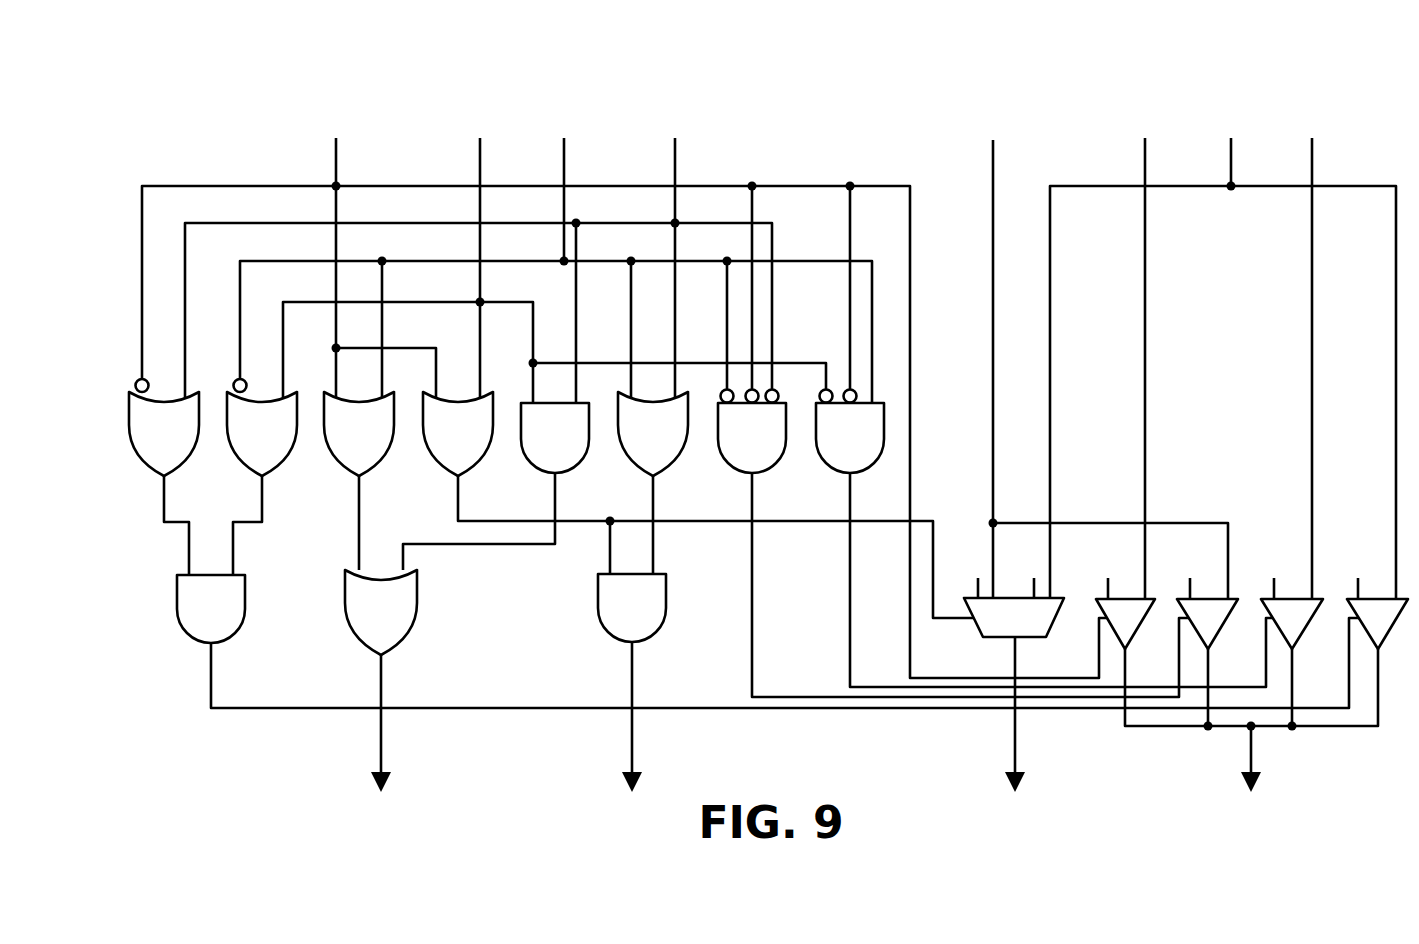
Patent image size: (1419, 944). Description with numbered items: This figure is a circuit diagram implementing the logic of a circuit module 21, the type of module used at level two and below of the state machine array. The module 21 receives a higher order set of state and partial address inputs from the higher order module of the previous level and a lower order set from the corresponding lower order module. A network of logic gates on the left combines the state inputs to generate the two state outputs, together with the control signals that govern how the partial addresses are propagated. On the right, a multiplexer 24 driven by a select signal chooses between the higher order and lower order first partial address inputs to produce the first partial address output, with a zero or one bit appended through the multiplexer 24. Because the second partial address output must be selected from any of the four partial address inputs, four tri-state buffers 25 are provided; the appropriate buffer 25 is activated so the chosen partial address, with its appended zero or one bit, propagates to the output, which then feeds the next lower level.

The circuit module 21 is at (747, 435).
The multiplexer 24 is at (1054, 616).
The tri-state buffer 25 is at (1140, 623).